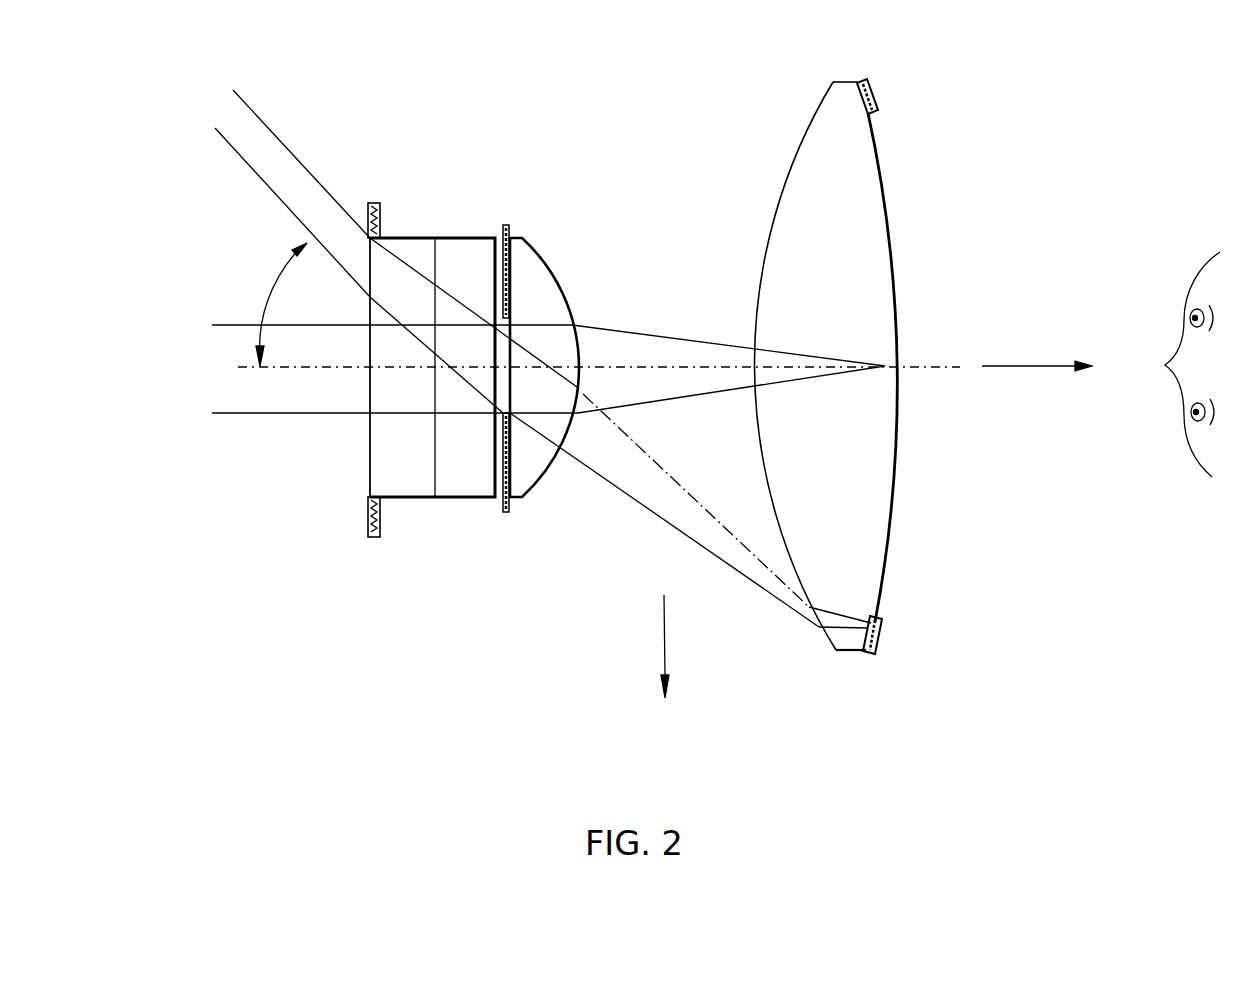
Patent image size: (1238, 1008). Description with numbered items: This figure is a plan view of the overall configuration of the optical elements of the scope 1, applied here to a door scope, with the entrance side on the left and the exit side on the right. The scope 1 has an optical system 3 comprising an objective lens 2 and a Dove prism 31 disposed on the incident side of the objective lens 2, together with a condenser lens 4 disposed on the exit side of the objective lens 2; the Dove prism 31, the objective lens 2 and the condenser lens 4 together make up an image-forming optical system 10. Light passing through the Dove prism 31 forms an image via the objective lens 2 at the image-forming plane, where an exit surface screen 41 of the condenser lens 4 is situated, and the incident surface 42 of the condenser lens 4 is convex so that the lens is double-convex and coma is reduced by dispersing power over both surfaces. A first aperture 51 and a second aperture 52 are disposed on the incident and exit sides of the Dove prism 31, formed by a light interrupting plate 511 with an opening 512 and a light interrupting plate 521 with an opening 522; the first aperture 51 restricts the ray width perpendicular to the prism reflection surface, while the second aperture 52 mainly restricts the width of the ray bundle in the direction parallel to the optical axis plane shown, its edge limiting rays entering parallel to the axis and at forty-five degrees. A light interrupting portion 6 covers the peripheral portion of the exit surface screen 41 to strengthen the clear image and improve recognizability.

The scope 1 is at (587, 108).
The objective lens 2 is at (530, 240).
The optical system 3 is at (582, 653).
The condenser lens 4 is at (847, 82).
The light interrupting portion 6 is at (874, 98).
The image-forming optical system 10 is at (948, 718).
The Dove prism 31 is at (460, 253).
The exit surface screen 41 is at (898, 310).
The incident surface 42 is at (787, 160).
The first aperture 51 is at (377, 178).
The second aperture 52 is at (512, 536).
The light interrupting plate 511 is at (368, 540).
The opening 512 is at (365, 492).
The light interrupting plate 521 is at (506, 227).
The opening 522 is at (493, 422).